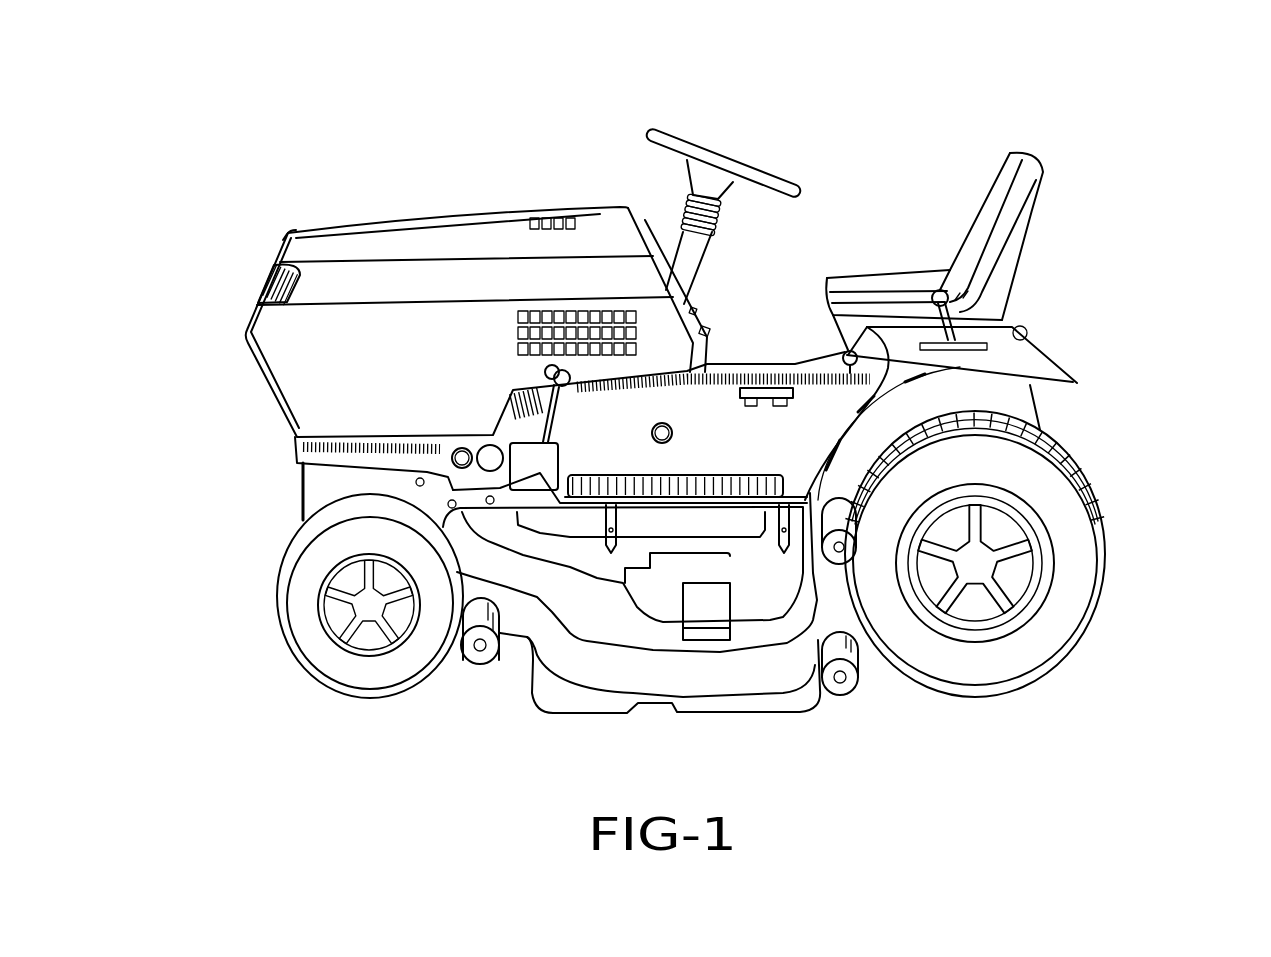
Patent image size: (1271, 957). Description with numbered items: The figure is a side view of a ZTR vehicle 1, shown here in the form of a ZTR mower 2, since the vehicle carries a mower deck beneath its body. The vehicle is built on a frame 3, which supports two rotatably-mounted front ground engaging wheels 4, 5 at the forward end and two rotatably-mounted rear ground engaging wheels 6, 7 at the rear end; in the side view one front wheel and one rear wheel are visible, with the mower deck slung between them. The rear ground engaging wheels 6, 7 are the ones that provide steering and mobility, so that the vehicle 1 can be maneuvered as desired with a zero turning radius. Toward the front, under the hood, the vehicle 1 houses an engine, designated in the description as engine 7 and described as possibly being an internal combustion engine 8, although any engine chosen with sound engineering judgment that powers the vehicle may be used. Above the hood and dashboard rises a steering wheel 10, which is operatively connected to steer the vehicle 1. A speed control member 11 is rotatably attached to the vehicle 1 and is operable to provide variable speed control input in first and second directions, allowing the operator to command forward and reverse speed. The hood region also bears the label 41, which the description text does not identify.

The riding lawn mower 1 is at (848, 187).
The vehicle body 2 is at (920, 177).
The front frame 3 is at (300, 476).
The front wheel hub 4 is at (303, 633).
The front wheel 5 is at (265, 571).
The rear wheel 6 is at (1037, 648).
The cover edge 7 is at (248, 253).
The hood front vent 8 is at (228, 306).
The steering wheel 10 is at (688, 166).
The hood 11 is at (582, 183).
The hood top panel 41 is at (503, 183).